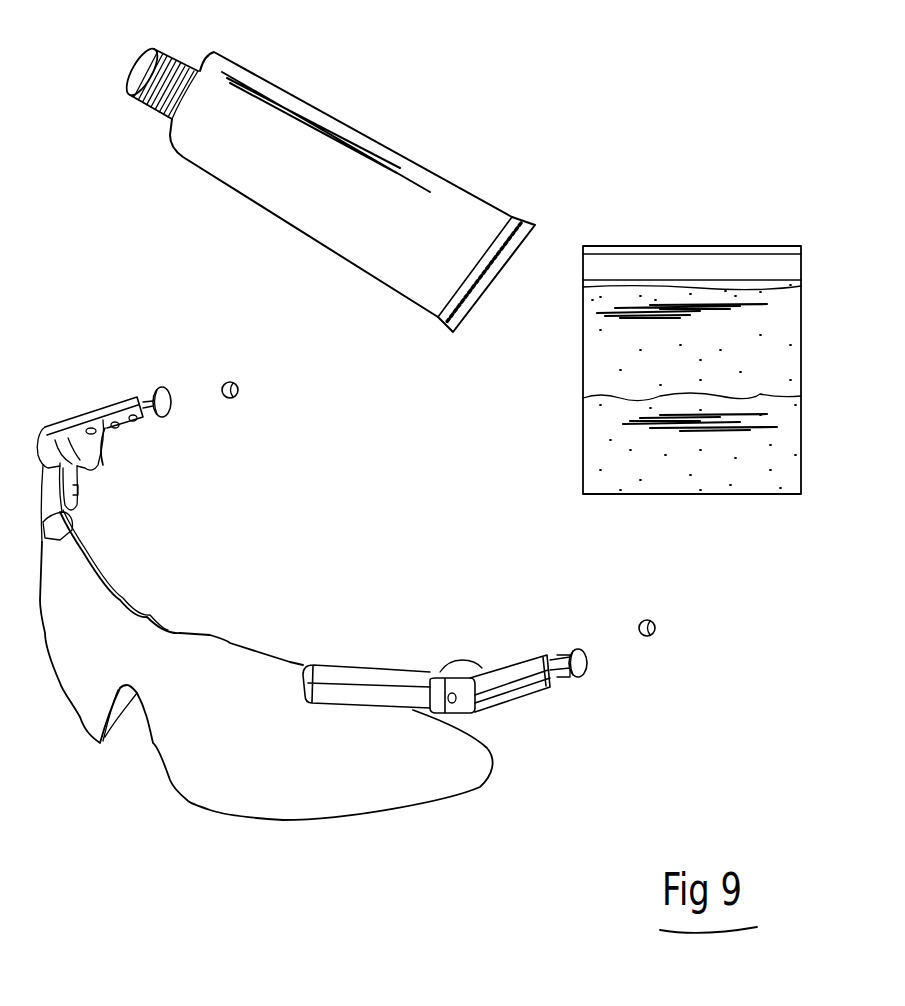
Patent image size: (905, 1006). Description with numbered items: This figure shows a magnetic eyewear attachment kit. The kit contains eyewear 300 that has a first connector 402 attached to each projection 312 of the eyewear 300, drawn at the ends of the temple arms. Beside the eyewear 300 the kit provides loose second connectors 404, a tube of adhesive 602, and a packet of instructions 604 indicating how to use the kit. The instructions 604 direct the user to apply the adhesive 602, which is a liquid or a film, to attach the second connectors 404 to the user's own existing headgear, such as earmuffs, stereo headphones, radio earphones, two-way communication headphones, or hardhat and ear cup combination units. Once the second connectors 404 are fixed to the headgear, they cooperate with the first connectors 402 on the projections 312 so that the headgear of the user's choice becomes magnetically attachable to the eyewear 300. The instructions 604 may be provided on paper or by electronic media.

The eyewear 300 is at (268, 598).
The projection 312 is at (145, 393).
The first connector 402 is at (173, 393).
The second connector 404 is at (238, 387).
The adhesive 602 is at (445, 217).
The instructions 604 is at (788, 328).